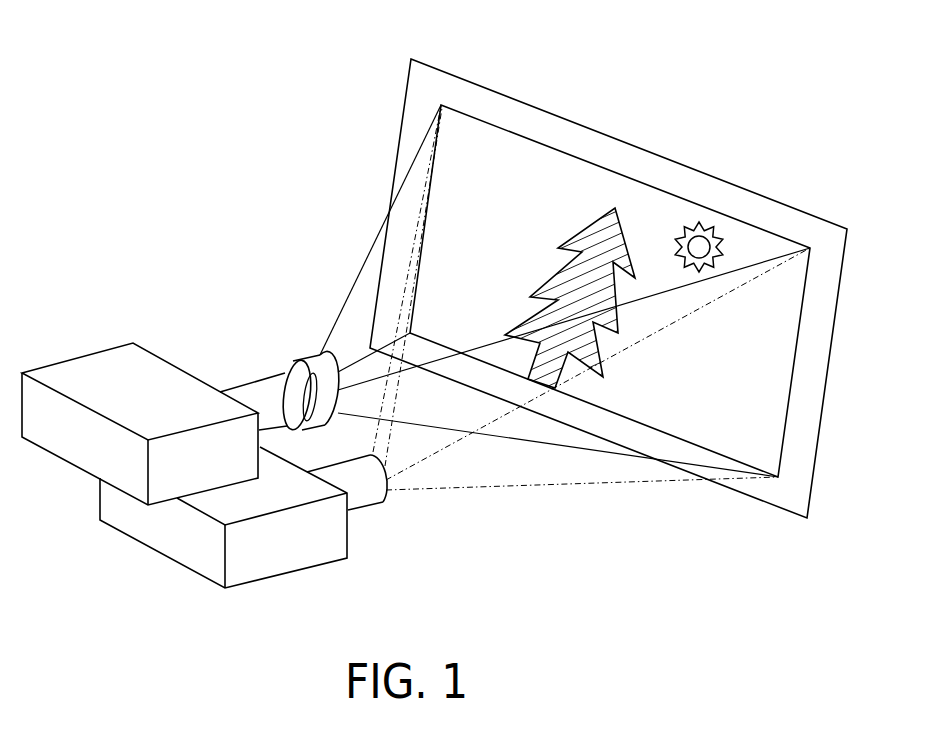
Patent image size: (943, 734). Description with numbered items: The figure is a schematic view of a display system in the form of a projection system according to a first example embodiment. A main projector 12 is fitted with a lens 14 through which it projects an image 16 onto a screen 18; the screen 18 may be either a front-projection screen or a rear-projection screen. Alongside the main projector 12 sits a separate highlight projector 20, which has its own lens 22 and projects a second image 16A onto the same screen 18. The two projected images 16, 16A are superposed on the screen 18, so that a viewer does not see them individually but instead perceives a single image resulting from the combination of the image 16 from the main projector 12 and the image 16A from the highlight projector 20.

The main projector 12 is at (110, 373).
The lens 14 is at (272, 388).
The image 16 is at (610, 324).
The image 16A is at (560, 184).
The screen 18 is at (431, 85).
The highlight projector 20 is at (272, 555).
The lens 22 is at (365, 497).